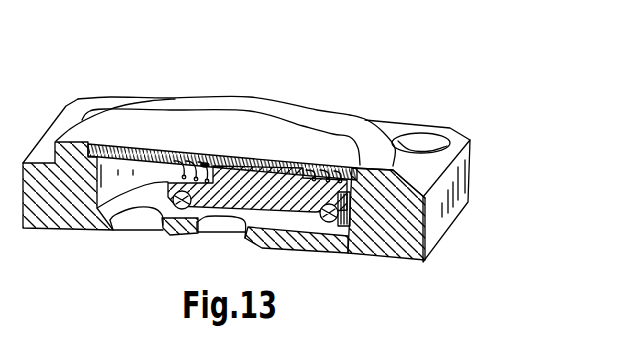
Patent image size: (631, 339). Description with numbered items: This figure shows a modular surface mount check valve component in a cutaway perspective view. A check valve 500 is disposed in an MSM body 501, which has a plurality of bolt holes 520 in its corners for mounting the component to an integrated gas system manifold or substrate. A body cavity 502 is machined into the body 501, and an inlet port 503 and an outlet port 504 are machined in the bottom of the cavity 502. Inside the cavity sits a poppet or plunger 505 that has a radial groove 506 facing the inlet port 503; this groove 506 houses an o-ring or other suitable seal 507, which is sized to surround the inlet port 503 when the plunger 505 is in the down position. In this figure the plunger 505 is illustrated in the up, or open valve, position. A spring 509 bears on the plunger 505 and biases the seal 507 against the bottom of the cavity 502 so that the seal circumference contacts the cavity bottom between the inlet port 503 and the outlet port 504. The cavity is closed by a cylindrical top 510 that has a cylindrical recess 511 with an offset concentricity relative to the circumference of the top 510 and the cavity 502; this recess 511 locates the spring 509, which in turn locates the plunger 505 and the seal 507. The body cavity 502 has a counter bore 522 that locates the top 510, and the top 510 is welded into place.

The check valve 500 is at (321, 80).
The MSM body 501 is at (470, 172).
The body cavity 502 is at (118, 170).
The inlet port 503 is at (222, 232).
The outlet port 504 is at (143, 218).
The plunger 505 is at (282, 177).
The radial groove 506 is at (327, 213).
The seal 507 is at (335, 225).
The spring 509 is at (206, 165).
The cylindrical top 510 is at (163, 132).
The cylindrical recess 511 is at (172, 160).
The bolt holes 520 is at (422, 140).
The counter bore 522 is at (87, 166).